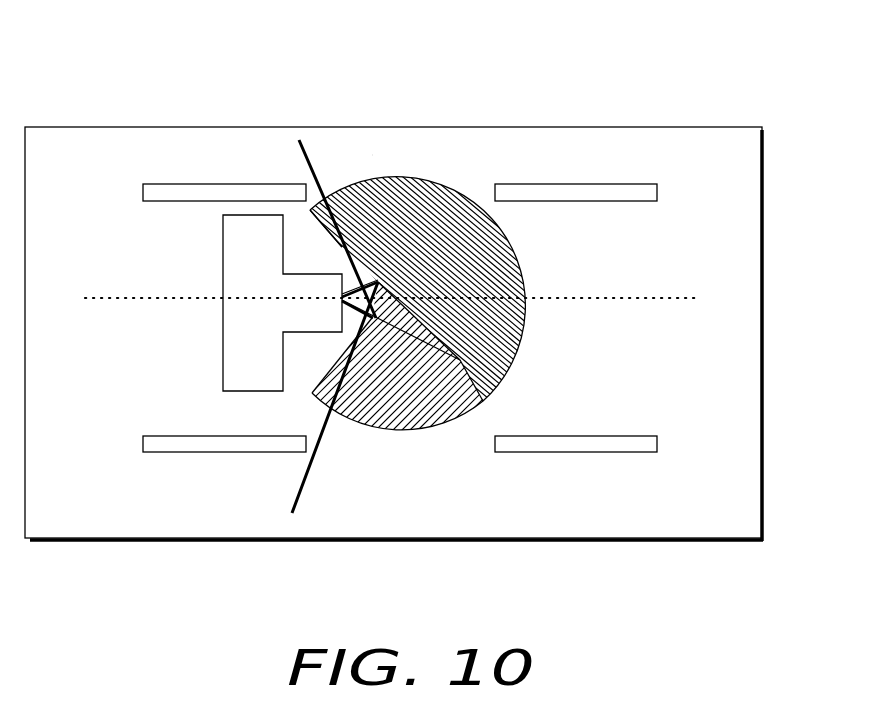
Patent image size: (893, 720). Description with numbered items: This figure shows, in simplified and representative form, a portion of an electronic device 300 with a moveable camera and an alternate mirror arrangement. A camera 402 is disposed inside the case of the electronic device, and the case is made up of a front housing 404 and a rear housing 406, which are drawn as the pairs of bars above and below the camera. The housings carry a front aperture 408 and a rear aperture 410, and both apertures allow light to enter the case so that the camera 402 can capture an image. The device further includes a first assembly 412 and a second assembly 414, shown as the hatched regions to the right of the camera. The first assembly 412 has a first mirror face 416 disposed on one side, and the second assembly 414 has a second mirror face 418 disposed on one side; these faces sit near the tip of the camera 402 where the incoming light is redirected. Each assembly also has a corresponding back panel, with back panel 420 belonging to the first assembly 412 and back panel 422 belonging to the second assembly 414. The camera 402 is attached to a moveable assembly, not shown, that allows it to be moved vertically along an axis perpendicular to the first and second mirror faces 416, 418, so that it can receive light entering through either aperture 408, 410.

The optical device 300 is at (770, 173).
The camera 402 is at (238, 325).
The front housing 404 is at (163, 184).
The rear housing 406 is at (163, 452).
The front aperture 408 is at (372, 155).
The rear aperture 410 is at (343, 432).
The first assembly 412 is at (460, 360).
The second assembly 414 is at (467, 243).
The first mirror face 416 is at (369, 330).
The second mirror face 418 is at (342, 247).
The back panel 420 is at (413, 437).
The back panel 422 is at (407, 173).